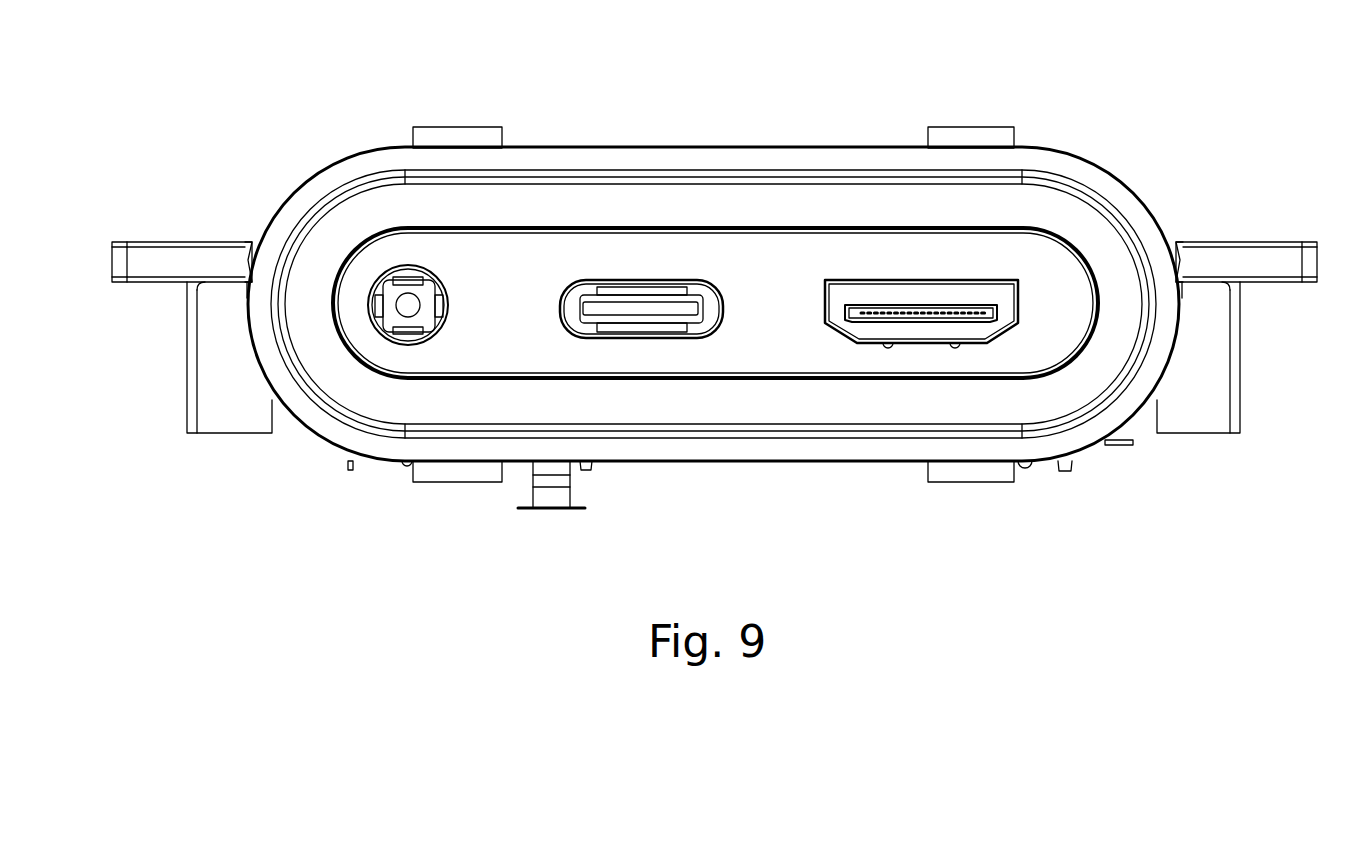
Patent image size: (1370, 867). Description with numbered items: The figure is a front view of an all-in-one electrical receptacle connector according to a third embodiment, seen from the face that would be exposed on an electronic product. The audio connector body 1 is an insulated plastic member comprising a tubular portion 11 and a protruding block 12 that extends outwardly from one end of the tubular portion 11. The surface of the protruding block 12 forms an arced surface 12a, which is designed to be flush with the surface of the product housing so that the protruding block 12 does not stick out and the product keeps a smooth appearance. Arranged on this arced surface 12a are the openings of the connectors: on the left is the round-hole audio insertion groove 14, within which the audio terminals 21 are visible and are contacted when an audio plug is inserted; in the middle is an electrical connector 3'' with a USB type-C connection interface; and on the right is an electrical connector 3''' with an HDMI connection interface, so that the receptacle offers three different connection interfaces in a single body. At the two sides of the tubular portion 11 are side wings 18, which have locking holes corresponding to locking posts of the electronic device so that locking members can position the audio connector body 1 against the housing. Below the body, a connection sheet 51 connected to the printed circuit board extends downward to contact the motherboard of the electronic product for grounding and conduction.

The audio connector body 1 is at (258, 163).
The tubular portion 11 is at (795, 158).
The protruding block 12 is at (574, 253).
The arced surface 12a is at (762, 298).
The audio insertion groove 14 is at (440, 332).
The audio terminals 21 is at (447, 305).
The electrical connector with USB type-C connection interface 3'' is at (641, 287).
The electrical connector with HDMI connection interface 3''' is at (921, 292).
The side wings 18 is at (1240, 255).
The connection sheet 51 is at (540, 494).